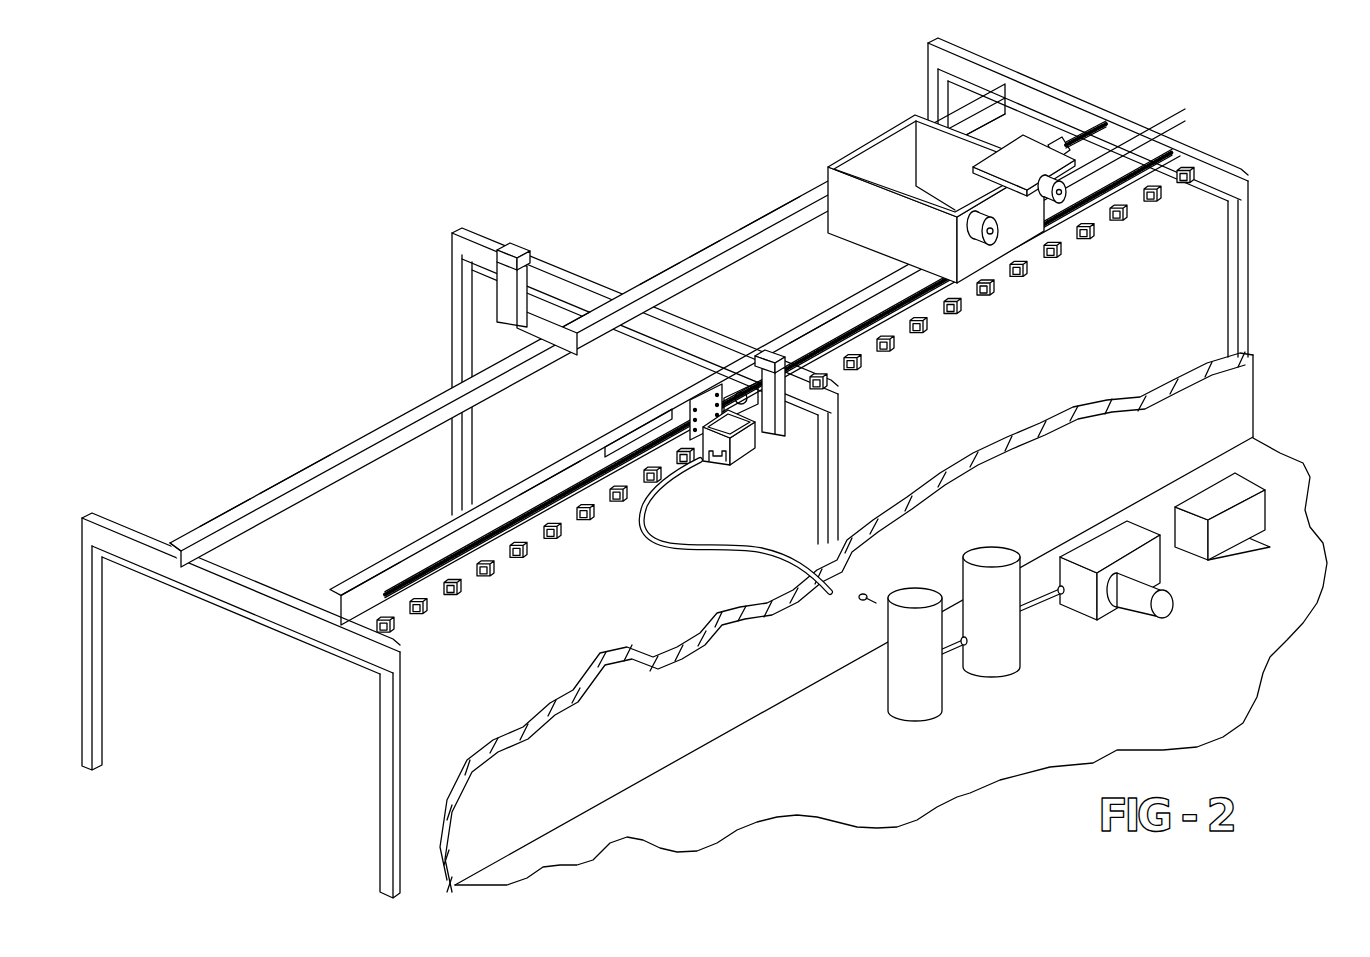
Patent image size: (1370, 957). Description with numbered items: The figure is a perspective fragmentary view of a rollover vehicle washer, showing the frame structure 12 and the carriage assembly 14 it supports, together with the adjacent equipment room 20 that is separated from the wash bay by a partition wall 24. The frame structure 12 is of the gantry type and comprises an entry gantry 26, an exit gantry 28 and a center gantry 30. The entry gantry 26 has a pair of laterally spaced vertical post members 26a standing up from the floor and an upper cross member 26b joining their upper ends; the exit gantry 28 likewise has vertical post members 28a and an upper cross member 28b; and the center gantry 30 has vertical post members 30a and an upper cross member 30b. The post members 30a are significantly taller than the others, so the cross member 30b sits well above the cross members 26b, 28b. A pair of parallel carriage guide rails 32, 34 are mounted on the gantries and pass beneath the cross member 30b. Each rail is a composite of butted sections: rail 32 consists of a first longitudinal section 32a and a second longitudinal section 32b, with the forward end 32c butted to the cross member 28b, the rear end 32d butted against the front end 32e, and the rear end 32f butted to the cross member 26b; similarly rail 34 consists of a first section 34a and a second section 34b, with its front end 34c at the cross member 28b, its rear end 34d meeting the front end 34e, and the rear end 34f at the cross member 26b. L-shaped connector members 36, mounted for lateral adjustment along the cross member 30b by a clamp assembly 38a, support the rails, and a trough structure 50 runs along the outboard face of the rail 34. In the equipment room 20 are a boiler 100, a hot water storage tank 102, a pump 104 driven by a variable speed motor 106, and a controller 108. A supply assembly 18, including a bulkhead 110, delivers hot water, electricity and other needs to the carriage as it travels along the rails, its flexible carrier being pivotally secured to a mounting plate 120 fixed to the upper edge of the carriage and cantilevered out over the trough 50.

The frame structure 12 is at (358, 393).
The carriage assembly 14 is at (806, 139).
The supply assembly 18 is at (652, 555).
The equipment room 20 is at (846, 781).
The partition wall 24 is at (1161, 436).
The entry gantry 26 is at (1091, 197).
The vertical post members 26a is at (928, 100).
The upper cross member 26b is at (1235, 165).
The exit gantry 28 is at (286, 655).
The vertical post members 28a is at (100, 565).
The upper cross member 28b is at (302, 625).
The center gantry 30 is at (641, 348).
The vertical post members 30a is at (460, 300).
The upper cross member 30b is at (763, 350).
The carriage guide rail 32 is at (647, 316).
The first longitudinal section 32a is at (288, 480).
The second longitudinal section 32b is at (763, 213).
The forward end 32c is at (233, 510).
The rear end 32d is at (560, 372).
The front end 32e is at (697, 250).
The rear end 32f is at (1007, 118).
The carriage guide rail 34 is at (748, 345).
The first longitudinal section 34a is at (547, 480).
The second longitudinal section 34b is at (820, 320).
The front end 34c is at (340, 583).
The rear end 34d is at (632, 412).
The front end 34e is at (715, 387).
The rear end 34f is at (1120, 150).
The L-shaped connector member 36 is at (480, 318).
The clamp assembly 38a is at (510, 245).
The trough structure 50 is at (470, 578).
The boiler 100 is at (890, 680).
The hot water storage tank 102 is at (1013, 640).
The pump 104 is at (1118, 535).
The variable speed motor 106 is at (1137, 607).
The controller 108 is at (1260, 510).
The bulkhead 110 is at (744, 452).
The mounting plate 120 is at (1022, 152).